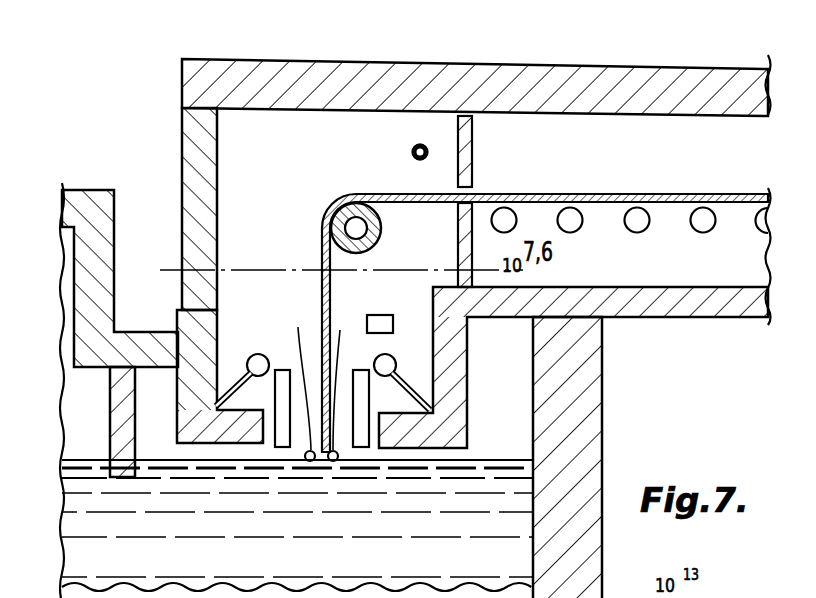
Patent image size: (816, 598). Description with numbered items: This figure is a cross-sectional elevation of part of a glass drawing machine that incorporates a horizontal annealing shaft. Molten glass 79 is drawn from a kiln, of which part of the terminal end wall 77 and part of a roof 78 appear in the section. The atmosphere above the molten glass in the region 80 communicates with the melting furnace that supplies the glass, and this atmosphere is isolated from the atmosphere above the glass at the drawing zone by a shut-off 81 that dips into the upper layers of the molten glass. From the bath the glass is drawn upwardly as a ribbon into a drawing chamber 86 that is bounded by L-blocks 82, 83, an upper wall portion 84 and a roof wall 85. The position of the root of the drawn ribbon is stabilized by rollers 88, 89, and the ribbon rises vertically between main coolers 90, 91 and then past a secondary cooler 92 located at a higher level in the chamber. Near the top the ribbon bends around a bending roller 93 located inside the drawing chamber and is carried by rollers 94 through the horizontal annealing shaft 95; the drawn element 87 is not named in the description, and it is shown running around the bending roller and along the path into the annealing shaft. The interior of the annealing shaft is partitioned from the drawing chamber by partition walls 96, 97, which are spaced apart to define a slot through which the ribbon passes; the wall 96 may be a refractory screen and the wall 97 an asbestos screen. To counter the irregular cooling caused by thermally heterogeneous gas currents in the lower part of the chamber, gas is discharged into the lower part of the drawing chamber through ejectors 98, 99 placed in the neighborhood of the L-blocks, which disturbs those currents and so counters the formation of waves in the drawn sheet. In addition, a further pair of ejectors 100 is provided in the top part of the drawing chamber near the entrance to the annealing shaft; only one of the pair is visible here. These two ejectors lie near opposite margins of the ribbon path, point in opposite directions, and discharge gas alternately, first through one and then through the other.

The terminal end wall 77 is at (575, 425).
The roof 78 is at (128, 347).
The molten glass 79 is at (330, 565).
The region 80 is at (92, 427).
The shut-off 81 is at (120, 387).
The L-block 82 is at (212, 320).
The L-block 83 is at (452, 348).
The upper wall portion 84 is at (198, 143).
The roof wall 85 is at (335, 68).
The drawing chamber 86 is at (278, 164).
The conveyor belt 87 is at (330, 286).
The roller 88 is at (299, 381).
The roller 89 is at (344, 383).
The main cooler 90 is at (284, 374).
The main cooler 91 is at (361, 374).
The secondary cooler 92 is at (384, 315).
The bending roller 93 is at (366, 228).
The rollers 94 is at (515, 225).
The horizontal annealing shaft 95 is at (693, 172).
The partition wall 96 is at (460, 247).
The partition wall 97 is at (473, 146).
The ejector 98 is at (258, 354).
The ejector 99 is at (392, 357).
The ejectors 100 is at (411, 151).